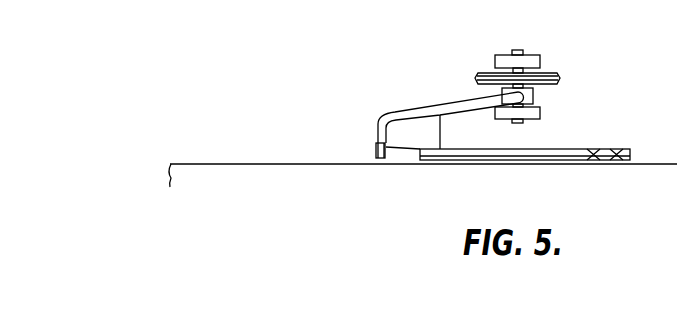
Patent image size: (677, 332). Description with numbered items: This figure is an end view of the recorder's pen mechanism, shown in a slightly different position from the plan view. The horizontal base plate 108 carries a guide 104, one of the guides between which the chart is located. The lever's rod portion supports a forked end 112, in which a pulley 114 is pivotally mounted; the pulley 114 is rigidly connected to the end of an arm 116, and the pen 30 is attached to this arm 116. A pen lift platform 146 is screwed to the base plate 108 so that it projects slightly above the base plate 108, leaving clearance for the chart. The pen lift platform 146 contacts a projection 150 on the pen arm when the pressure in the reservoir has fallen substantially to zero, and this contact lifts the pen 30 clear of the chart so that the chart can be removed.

The pen 30 is at (376, 157).
The guide 104 is at (588, 163).
The base plate 108 is at (259, 165).
The forked end 112 is at (519, 51).
The pulley 114 is at (556, 76).
The arm 116 is at (427, 92).
The pen lift platform 146 is at (543, 150).
The projection 150 is at (405, 144).